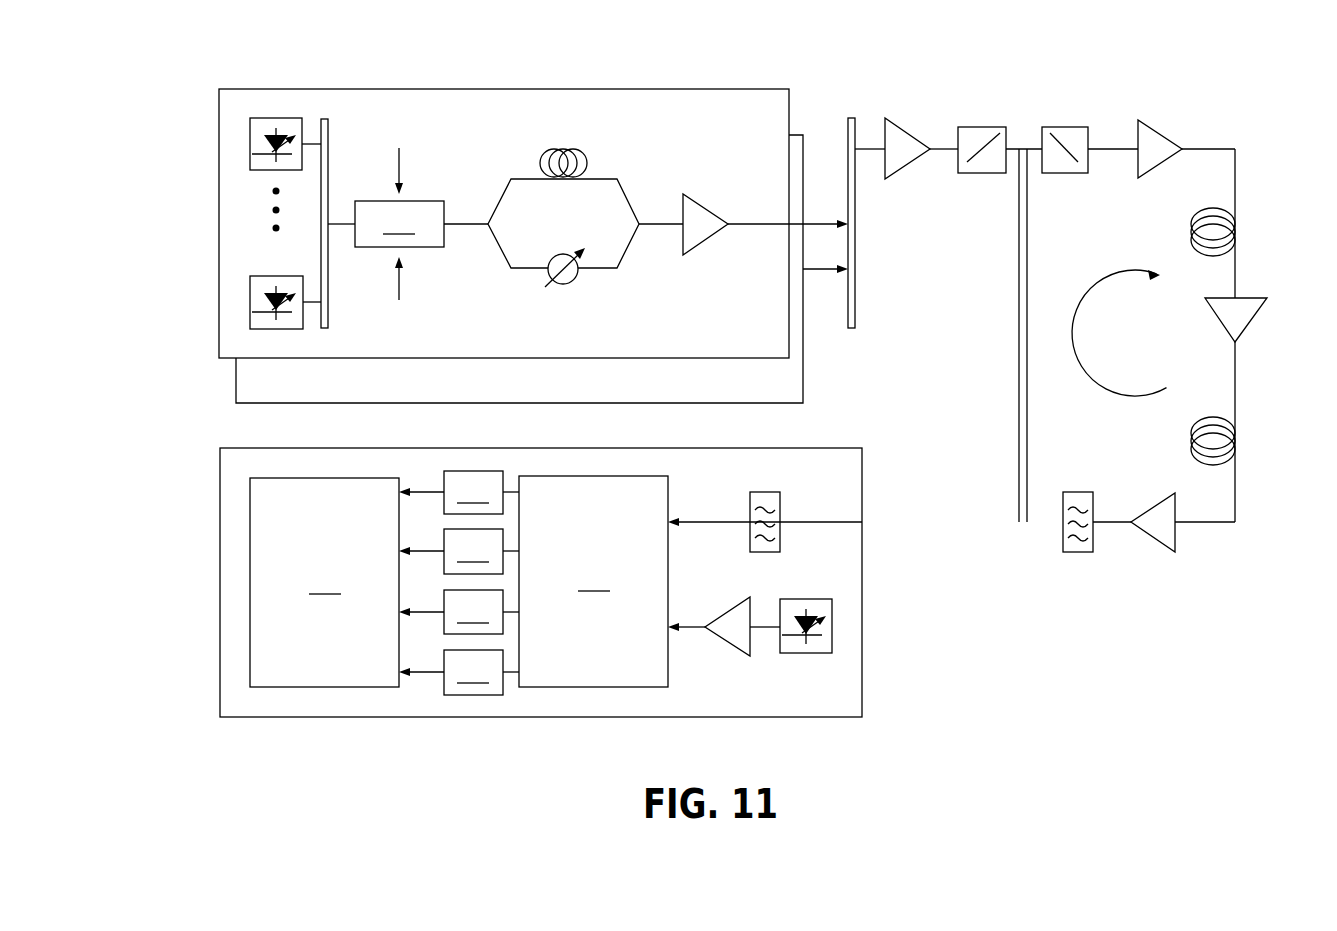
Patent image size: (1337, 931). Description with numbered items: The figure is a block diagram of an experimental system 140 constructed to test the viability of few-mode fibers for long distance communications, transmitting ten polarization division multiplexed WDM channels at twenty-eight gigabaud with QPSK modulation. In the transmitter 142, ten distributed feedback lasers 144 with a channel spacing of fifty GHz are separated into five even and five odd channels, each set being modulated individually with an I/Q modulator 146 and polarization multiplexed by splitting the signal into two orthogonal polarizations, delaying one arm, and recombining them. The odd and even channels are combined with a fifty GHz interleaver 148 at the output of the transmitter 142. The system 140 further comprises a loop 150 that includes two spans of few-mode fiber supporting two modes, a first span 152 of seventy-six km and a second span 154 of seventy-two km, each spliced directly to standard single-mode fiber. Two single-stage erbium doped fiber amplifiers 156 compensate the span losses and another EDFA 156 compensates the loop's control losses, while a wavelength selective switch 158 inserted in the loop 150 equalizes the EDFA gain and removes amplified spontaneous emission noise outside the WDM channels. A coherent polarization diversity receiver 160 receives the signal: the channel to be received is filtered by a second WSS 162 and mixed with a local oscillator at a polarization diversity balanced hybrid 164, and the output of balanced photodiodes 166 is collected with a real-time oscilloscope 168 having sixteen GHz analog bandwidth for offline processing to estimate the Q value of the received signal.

The experimental system 140 is at (1280, 106).
The transmitter 142 is at (205, 89).
The distributed feedback (DFB) lasers 144 is at (290, 100).
The I/Q modulator 146 is at (399, 224).
The interleaver 148 is at (856, 308).
The loop 150 is at (1237, 577).
The first span 152 is at (1190, 233).
The second span 154 is at (1190, 442).
The erbium doped fiber amplifiers (EDFAs) 156 is at (1152, 140).
The wavelength selective switch (WSS) 158 is at (1095, 505).
The coherent polarization diversity receiver 160 is at (205, 448).
The second WSS 162 is at (782, 503).
The polarization diversity balanced hybrid 164 is at (593, 581).
The balanced photodiodes 166 is at (459, 583).
The real-time oscilloscope 168 is at (324, 582).